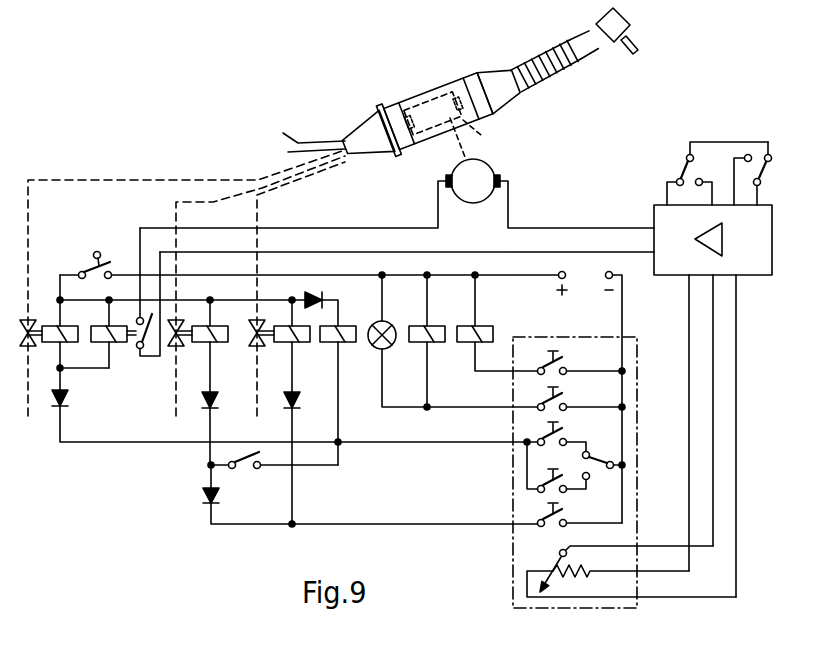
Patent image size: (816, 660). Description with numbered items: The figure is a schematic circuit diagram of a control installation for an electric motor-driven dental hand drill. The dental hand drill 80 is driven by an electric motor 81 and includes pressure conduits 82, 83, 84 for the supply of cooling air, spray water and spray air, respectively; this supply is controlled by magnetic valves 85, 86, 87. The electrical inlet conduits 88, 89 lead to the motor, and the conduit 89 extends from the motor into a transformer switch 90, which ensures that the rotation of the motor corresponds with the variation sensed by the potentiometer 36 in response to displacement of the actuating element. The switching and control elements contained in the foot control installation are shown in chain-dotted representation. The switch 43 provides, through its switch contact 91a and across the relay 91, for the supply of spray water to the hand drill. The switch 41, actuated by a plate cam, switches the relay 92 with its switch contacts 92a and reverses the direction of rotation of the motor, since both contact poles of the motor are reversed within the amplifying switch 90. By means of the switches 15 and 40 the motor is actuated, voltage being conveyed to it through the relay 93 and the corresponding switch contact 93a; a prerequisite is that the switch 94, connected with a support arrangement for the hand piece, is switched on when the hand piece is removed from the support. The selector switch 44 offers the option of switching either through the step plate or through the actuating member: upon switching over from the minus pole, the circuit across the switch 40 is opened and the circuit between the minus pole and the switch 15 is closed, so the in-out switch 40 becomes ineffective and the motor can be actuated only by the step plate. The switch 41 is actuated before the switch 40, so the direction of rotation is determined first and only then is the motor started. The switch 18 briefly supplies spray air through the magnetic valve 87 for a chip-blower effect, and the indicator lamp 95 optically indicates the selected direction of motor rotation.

The dental hand drill 80 is at (460, 80).
The electric motor 81 is at (480, 158).
The pressure conduit 82 is at (180, 179).
The pressure conduit 83 is at (176, 204).
The pressure conduit 84 is at (277, 188).
The magnetic valve 85 is at (31, 341).
The magnetic valve 86 is at (179, 341).
The magnetic valve 87 is at (260, 341).
The electrical inlet conduit 88 is at (438, 201).
The electrical inlet conduit 89 is at (508, 201).
The transformer switch 90 is at (653, 209).
The relay 91 is at (484, 326).
The switch contact 91a is at (243, 463).
The relay 92 is at (436, 326).
The switch contact 92a is at (682, 170).
The relay 93 is at (345, 327).
The switch contact 93a is at (767, 172).
The switch 94 is at (90, 263).
The indicator lamp 95 is at (399, 318).
The switch 15 is at (562, 436).
The switch 18 is at (562, 517).
The potentiometer 36 is at (549, 569).
The in-out switch 40 is at (562, 475).
The switch 41 is at (562, 401).
The switch 43 is at (562, 365).
The selector switch 44 is at (598, 460).